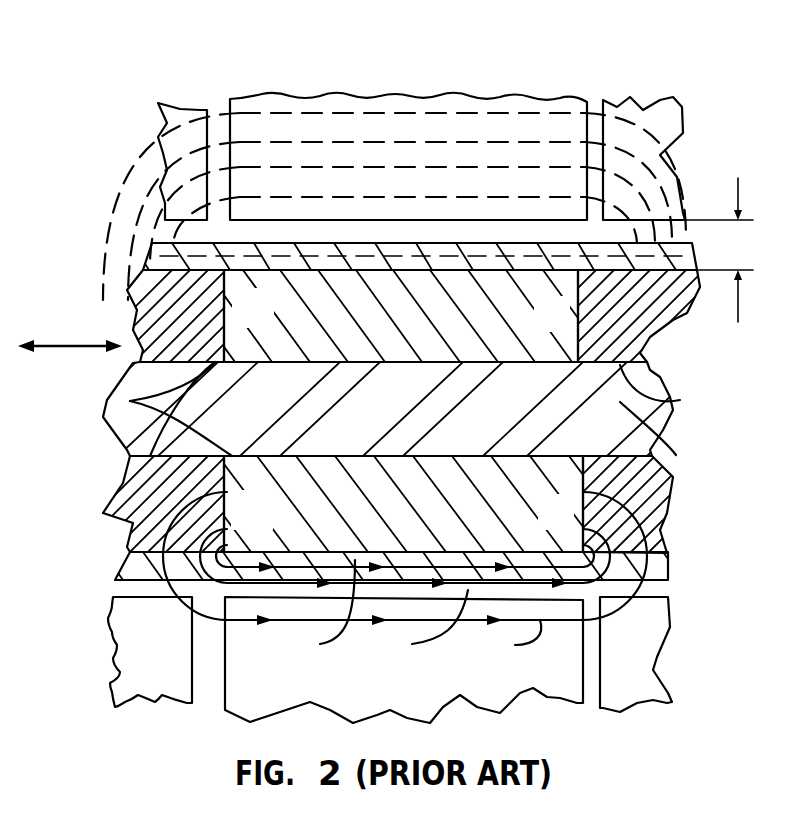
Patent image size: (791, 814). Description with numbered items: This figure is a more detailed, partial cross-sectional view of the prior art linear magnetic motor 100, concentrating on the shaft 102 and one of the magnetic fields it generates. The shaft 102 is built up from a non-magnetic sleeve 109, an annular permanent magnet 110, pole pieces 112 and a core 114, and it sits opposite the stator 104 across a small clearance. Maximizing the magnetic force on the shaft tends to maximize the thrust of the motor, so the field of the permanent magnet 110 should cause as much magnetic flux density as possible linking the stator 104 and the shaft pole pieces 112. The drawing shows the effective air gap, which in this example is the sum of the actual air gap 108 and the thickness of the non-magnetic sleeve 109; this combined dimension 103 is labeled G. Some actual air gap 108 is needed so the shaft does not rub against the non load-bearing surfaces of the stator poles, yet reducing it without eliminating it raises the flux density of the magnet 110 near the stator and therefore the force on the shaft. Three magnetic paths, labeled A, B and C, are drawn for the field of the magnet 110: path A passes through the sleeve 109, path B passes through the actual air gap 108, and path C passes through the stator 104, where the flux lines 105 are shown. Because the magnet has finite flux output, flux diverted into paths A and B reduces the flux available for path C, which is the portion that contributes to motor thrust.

The linear motor assembly 100 is at (703, 85).
The shaft 102 is at (682, 416).
The air gap 103 is at (682, 232).
The stator 104 is at (690, 158).
The magnetic flux lines in stator 105 is at (565, 100).
The actual air gap 108 is at (108, 590).
The sleeve 109 is at (152, 245).
The annular permanent magnet 110 is at (130, 401).
The pole pieces 112 is at (130, 312).
The core 114 is at (620, 400).